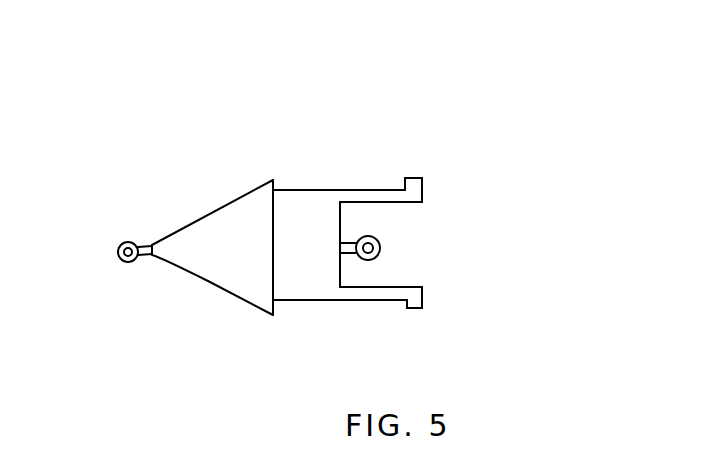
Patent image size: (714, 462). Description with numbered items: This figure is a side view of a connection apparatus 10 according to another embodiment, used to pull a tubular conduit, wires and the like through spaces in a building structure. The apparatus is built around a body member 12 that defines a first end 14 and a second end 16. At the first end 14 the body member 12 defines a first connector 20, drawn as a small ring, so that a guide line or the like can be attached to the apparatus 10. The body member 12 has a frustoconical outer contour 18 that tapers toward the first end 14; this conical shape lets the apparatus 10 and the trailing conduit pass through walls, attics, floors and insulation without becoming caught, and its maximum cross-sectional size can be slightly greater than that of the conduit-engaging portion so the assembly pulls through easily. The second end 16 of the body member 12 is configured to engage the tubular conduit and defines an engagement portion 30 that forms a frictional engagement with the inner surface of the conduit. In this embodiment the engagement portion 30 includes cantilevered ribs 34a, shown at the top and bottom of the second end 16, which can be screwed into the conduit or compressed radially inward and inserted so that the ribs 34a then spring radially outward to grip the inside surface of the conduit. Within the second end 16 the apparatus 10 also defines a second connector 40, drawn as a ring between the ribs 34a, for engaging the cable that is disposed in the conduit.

The connection apparatus 10 is at (188, 118).
The body member 12 is at (283, 185).
The first end 14 is at (162, 222).
The second end 16 is at (447, 182).
The frustoconical outer contour 18 is at (215, 270).
The first connector 20 is at (125, 262).
The engagement portion 30 is at (363, 297).
The cantilevered ribs 34a is at (416, 178).
The second connector 40 is at (382, 242).